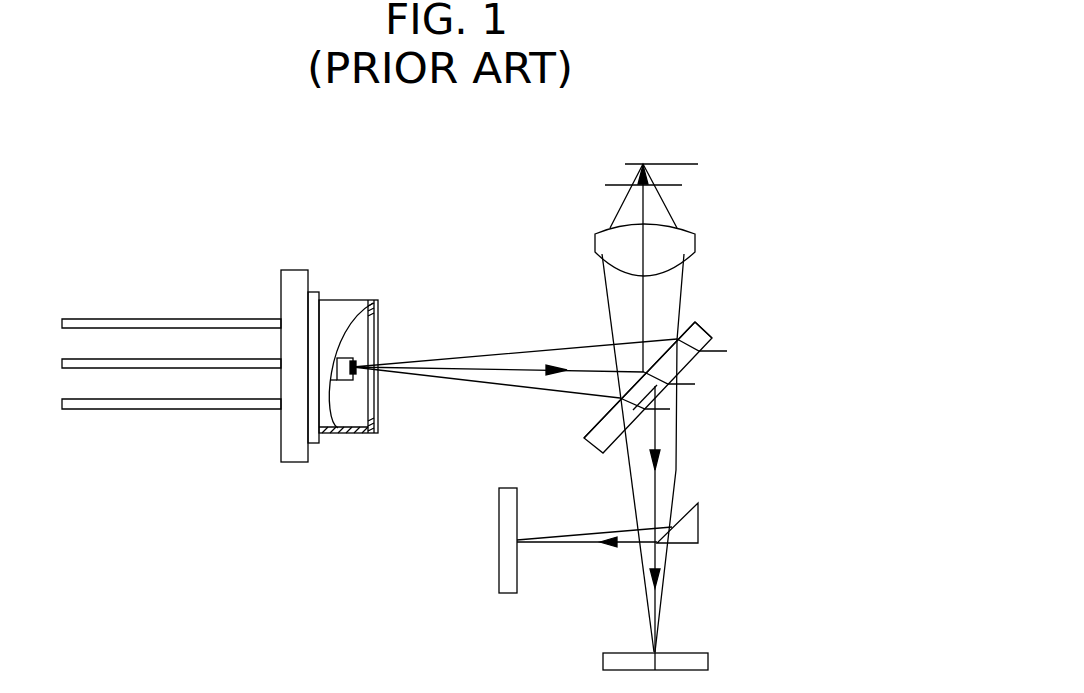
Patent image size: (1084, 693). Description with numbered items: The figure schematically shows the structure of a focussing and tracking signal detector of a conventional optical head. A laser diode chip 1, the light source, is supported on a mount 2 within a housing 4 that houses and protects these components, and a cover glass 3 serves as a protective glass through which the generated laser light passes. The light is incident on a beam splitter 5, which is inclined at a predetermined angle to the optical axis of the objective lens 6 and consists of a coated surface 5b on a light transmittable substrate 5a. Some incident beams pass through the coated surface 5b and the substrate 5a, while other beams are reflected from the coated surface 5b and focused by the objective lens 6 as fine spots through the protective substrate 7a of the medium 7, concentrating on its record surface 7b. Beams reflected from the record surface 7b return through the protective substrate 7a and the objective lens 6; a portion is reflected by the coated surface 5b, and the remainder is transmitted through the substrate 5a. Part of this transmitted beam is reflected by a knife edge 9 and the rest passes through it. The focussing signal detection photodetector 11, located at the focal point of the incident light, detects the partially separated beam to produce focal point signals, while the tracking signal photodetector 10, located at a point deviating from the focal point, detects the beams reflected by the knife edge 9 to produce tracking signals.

The laser diode chip 1 is at (358, 361).
The mount 2 is at (344, 352).
The cover glass 3 is at (363, 413).
The housing 4 is at (327, 428).
The beam splitter 5 is at (687, 369).
The light transmittable substrate 5a is at (695, 335).
The coated surface 5b is at (688, 323).
The objective lens 6 is at (686, 248).
The medium 7 is at (689, 135).
The protective substrate 7a is at (623, 184).
The record surface 7b is at (678, 164).
The knife edge 9 is at (693, 527).
The tracking signal photodetector 10 is at (507, 570).
The focussing signal detection photodetector 11 is at (693, 663).